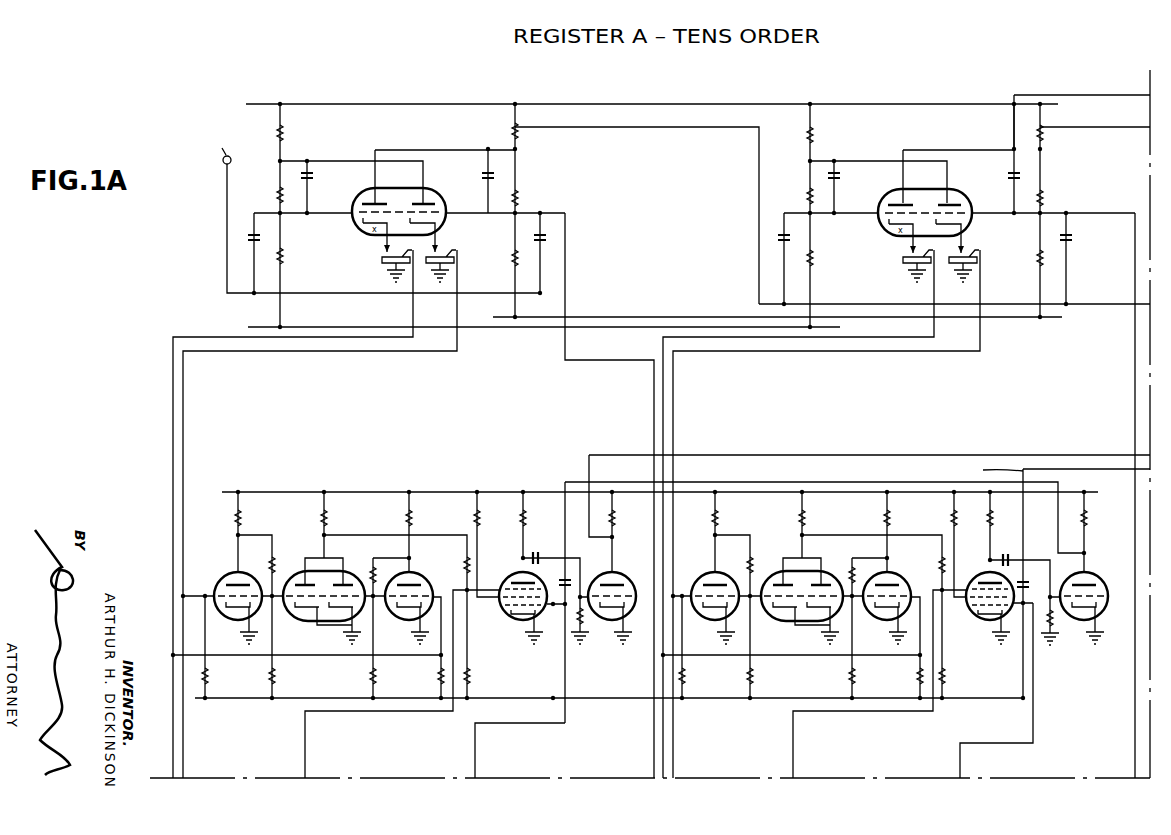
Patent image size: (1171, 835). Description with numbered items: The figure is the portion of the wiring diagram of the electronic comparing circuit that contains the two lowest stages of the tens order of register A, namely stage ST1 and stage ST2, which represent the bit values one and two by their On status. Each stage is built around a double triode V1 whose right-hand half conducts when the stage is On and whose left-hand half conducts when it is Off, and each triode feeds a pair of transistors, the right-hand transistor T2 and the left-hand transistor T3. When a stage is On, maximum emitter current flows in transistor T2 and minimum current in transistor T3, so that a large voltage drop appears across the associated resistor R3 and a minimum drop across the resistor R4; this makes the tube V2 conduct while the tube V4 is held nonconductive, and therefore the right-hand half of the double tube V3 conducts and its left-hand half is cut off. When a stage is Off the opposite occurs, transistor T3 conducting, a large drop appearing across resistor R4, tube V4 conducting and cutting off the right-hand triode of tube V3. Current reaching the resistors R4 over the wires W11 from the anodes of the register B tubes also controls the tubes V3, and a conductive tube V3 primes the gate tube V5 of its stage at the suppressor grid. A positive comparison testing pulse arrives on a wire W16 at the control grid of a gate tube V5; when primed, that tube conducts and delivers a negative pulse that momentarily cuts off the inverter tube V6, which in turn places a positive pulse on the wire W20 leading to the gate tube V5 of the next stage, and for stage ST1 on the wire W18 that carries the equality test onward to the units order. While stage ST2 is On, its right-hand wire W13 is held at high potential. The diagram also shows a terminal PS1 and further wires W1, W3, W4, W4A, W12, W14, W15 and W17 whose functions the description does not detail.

The pulse source terminal PS1 is at (373, 212).
The stage ST1 is at (413, 96).
The stage ST2 is at (953, 96).
The triode V1 is at (355, 190).
The transistor T2 is at (461, 259).
The transistor T3 is at (381, 260).
The wire W1 is at (671, 104).
The wire W3 is at (641, 317).
The wire W4 is at (630, 128).
The wire W4A is at (1078, 306).
The wire W11 is at (183, 450).
The wire W12 is at (173, 464).
The wire W13 is at (566, 237).
The wire W14 is at (550, 328).
The wire W15 is at (305, 745).
The wire W16 is at (475, 745).
The wire W17 is at (1106, 95).
The wire W18 is at (929, 455).
The wire W20 is at (936, 482).
The tube V2 is at (219, 576).
The tube V3 is at (288, 582).
The tube V4 is at (425, 582).
The gate tube V5 is at (489, 582).
The inverter tube V6 is at (618, 582).
The resistor R3 is at (209, 676).
The resistor R4 is at (437, 680).